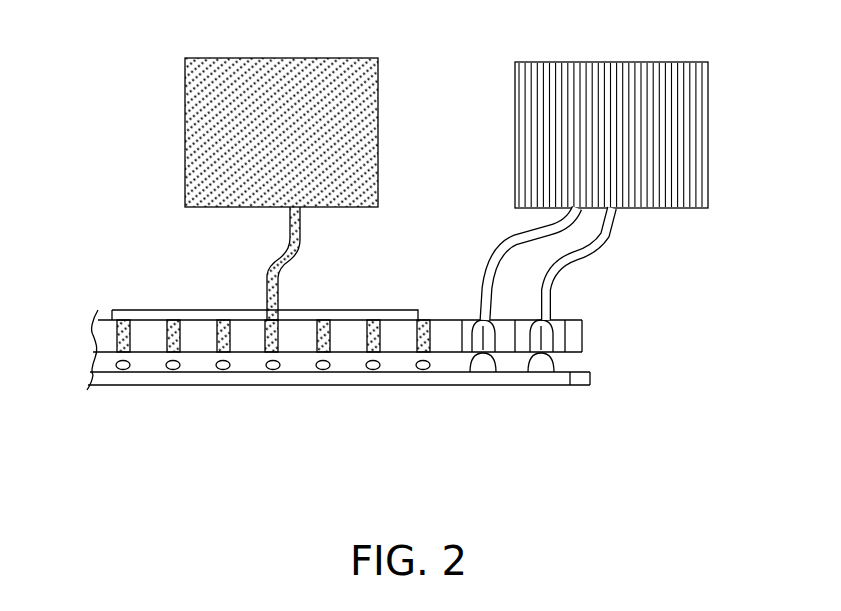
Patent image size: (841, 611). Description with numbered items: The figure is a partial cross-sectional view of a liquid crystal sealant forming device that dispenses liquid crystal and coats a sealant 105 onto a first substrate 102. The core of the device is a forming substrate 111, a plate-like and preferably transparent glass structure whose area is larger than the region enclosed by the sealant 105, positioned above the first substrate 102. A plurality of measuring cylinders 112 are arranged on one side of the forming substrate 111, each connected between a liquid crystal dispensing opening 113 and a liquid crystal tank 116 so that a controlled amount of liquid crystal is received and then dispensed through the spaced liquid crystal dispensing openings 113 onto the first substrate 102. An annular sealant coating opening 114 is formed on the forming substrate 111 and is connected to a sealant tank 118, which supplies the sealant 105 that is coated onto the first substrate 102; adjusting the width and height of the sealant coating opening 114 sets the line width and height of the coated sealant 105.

The first substrate 102 is at (572, 382).
The sealant 105 is at (542, 357).
The forming substrate 111 is at (573, 335).
The measuring cylinders 112 is at (280, 340).
The liquid crystal dispensing openings 113 is at (267, 350).
The sealant coating opening 114 is at (478, 338).
The liquid crystal tank 116 is at (223, 138).
The sealant tank 118 is at (548, 128).